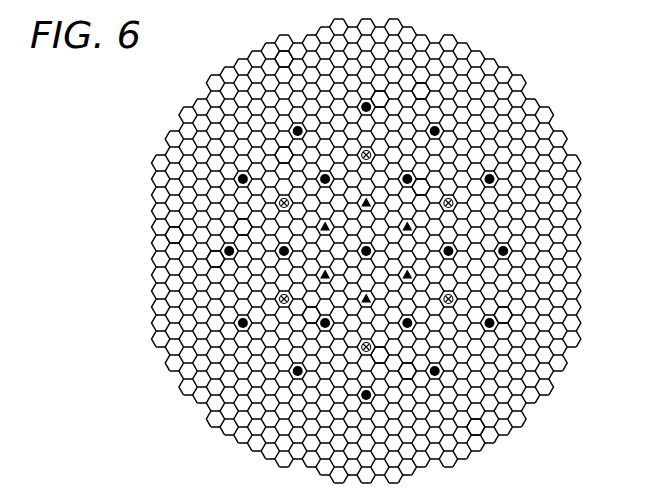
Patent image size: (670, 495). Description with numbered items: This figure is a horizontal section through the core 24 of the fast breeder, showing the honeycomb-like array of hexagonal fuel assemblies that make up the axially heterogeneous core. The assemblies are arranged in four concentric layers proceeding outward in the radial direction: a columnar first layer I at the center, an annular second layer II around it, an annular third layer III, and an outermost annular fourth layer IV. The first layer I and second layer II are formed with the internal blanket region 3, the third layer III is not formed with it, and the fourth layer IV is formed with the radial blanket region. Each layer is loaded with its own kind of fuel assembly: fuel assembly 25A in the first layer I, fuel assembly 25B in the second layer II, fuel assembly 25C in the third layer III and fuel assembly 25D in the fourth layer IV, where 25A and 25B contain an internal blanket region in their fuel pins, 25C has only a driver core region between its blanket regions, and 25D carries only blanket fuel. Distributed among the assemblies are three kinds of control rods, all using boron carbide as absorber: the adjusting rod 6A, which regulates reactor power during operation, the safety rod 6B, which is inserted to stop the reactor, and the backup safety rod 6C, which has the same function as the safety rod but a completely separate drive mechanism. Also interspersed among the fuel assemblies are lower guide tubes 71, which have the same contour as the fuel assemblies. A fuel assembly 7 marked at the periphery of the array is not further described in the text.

The internal blanket region 3 is at (476, 429).
The fuel assembly 7 is at (419, 91).
The core 24 is at (584, 202).
The fuel assembly 25A is at (311, 321).
The fuel assembly 25B is at (243, 227).
The fuel assembly 25C is at (376, 100).
The fuel assembly 25D is at (287, 61).
The adjusting rod 6A is at (508, 255).
The safety rod 6B is at (362, 306).
The backup safety rod 6C is at (315, 317).
The lower guide tube 71 is at (207, 267).
The first layer I is at (423, 184).
The second layer II is at (282, 156).
The third layer III is at (507, 318).
The fourth layer IV is at (170, 237).